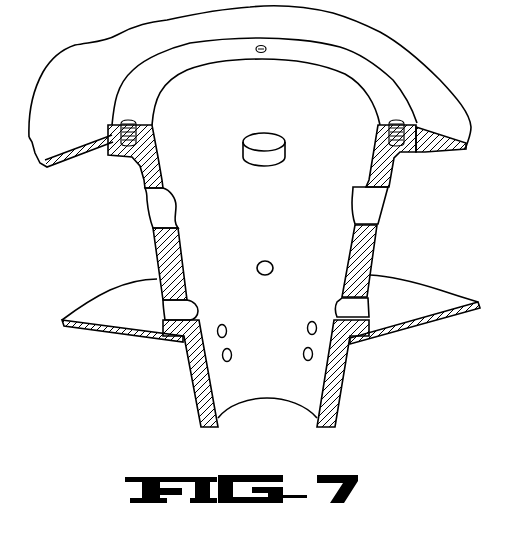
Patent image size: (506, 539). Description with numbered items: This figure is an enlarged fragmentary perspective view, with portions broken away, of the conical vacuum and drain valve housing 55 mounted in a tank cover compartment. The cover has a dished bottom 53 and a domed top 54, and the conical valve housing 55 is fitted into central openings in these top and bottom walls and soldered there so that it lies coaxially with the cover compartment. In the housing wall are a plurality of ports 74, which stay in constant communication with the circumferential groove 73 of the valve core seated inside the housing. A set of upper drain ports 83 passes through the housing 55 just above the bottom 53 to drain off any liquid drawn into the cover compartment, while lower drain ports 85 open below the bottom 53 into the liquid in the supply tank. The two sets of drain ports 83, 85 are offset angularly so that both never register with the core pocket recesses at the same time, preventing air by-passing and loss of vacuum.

The domed top 54 is at (383, 50).
The conical vacuum and drain valve housing 55 is at (157, 258).
The ports 74 is at (165, 207).
The upper drain ports 83 is at (187, 310).
The lower drain ports 85 is at (303, 354).
The dished bottom 53 is at (393, 330).
The circumferential groove 73 is at (494, 255).